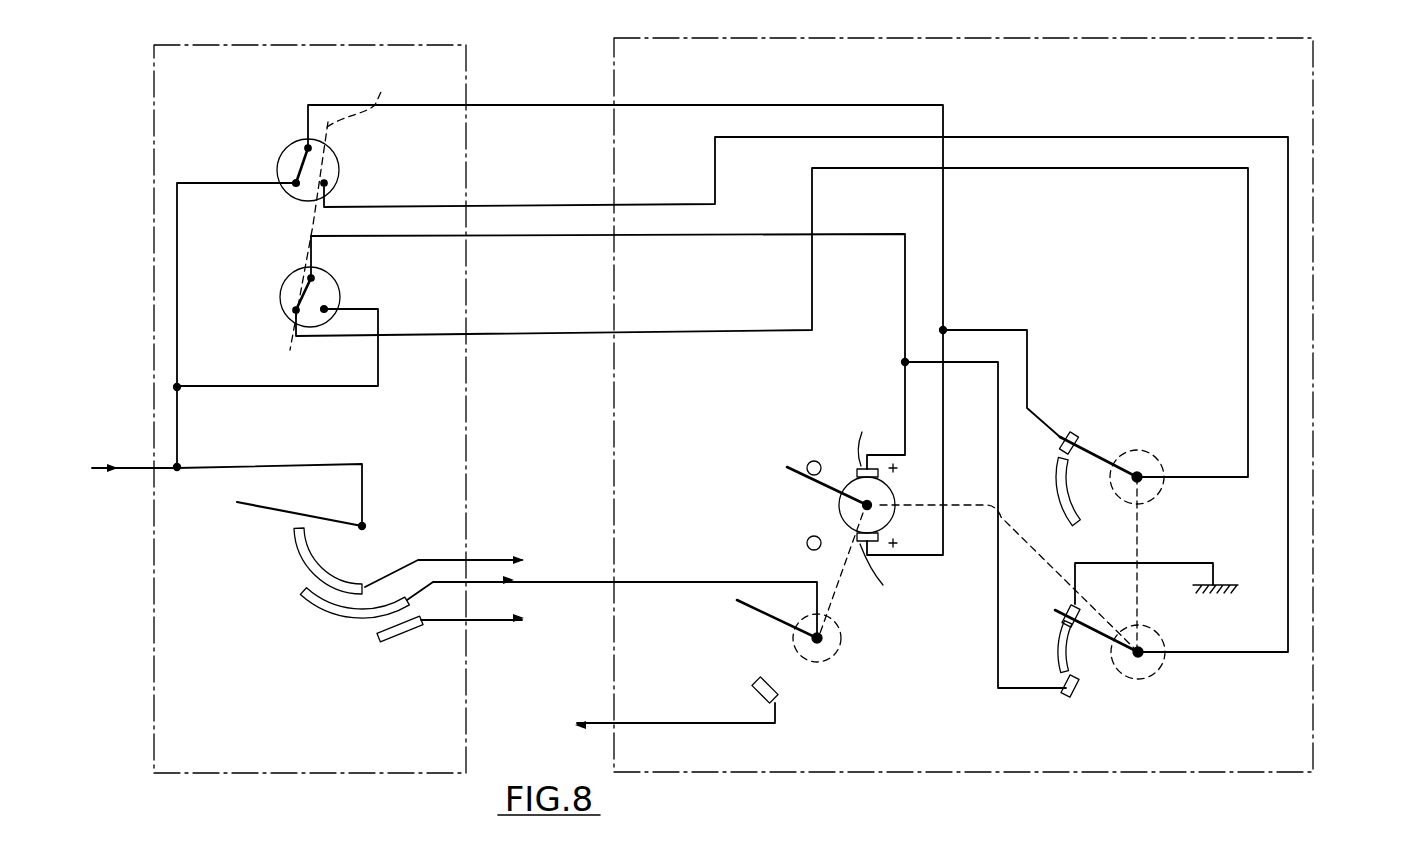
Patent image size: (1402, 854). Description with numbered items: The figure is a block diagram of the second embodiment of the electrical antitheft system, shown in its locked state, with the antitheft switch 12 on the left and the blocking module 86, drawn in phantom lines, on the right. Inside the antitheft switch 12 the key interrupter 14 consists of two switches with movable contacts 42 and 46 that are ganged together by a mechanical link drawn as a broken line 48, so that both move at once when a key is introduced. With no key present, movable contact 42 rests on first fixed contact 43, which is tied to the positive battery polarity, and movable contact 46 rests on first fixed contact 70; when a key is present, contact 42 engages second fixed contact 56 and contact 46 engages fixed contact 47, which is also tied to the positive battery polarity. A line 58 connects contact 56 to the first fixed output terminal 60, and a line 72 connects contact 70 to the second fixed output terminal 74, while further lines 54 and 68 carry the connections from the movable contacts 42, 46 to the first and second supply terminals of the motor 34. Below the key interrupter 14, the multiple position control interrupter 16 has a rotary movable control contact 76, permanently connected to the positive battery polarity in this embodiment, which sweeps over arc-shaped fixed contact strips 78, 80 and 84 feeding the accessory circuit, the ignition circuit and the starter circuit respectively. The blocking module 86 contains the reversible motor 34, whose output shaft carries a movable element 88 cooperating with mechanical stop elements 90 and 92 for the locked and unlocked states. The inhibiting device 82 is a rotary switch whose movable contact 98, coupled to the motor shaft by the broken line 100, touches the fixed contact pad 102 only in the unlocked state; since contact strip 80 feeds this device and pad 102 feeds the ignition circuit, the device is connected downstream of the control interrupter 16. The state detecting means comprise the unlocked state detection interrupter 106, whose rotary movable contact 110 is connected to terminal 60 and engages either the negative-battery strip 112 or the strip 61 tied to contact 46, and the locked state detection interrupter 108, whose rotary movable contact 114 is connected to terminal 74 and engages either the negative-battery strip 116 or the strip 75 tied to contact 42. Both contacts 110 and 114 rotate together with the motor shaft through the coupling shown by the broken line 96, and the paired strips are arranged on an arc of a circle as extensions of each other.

The antitheft switch 12 is at (150, 628).
The key interrupter 14 is at (137, 110).
The multiple position control interrupter 16 is at (325, 688).
The motor 34 is at (880, 490).
The movable contact 42 is at (298, 163).
The first fixed contact 43 is at (293, 189).
The movable contact 46 is at (300, 292).
The fixed contact 47 is at (325, 308).
The link 48 is at (344, 205).
The conductor 54 is at (762, 103).
The second fixed contact 56 is at (325, 181).
The line 58 is at (1128, 133).
The first fixed output terminal 60 is at (1143, 667).
The fixed contact 61 is at (1073, 700).
The conductor 68 is at (705, 236).
The first fixed contact 70 is at (287, 306).
The line 72 is at (1070, 170).
The second fixed output terminal 74 is at (1148, 452).
The fixed contact 75 is at (1070, 432).
The movable control contact 76 is at (305, 512).
The fixed contact strip 78 is at (305, 548).
The fixed contact strip 80 is at (302, 595).
The inhibiting device 82 is at (813, 692).
The contact strip 84 is at (388, 642).
The blocking module 86 is at (1318, 228).
The movable element 88 is at (793, 477).
The mechanical stop element 90 is at (812, 461).
The mechanical stop element 92 is at (807, 543).
The mechanical coupling 96 is at (1035, 563).
The movable contact 98 is at (762, 615).
The mechanical coupling 100 is at (845, 598).
The fixed contact pad 102 is at (753, 692).
The unlocked state detection interrupter 106 is at (1172, 642).
The locked state detection interrupter 108 is at (1183, 492).
The movable contact 110 is at (1093, 637).
The fixed contact 112 is at (1060, 640).
The movable contact 114 is at (1093, 448).
The fixed contact 116 is at (1058, 472).